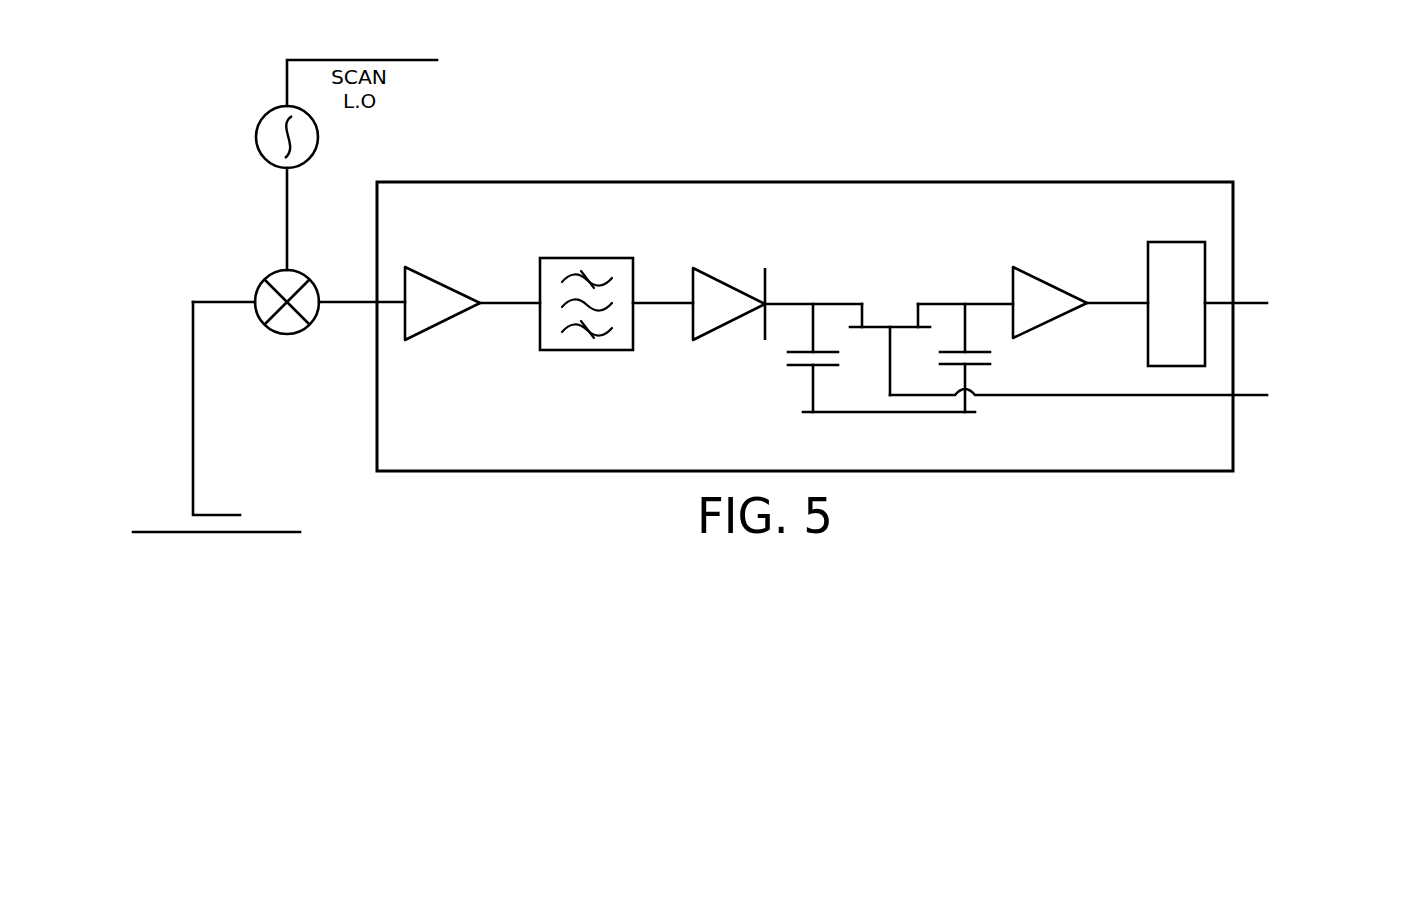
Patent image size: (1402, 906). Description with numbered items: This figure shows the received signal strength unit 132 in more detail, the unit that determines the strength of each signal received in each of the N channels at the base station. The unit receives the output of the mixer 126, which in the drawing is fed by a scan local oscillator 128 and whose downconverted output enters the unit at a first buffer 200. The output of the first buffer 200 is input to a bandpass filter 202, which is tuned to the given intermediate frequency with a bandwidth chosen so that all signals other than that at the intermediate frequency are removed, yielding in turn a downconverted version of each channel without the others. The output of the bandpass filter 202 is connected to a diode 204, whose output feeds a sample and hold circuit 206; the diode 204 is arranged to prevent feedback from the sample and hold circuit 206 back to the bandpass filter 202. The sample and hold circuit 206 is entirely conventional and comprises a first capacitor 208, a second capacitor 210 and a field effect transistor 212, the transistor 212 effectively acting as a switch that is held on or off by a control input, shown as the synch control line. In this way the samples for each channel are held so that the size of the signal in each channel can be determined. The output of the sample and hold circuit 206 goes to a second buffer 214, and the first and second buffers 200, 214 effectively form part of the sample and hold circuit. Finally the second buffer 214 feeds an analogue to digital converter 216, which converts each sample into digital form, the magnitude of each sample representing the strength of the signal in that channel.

The mixer 126 is at (259, 320).
The scan local oscillator 128 is at (263, 118).
The received signal strength unit 132 is at (976, 182).
The first buffer 200 is at (455, 321).
The bandpass filter 202 is at (569, 351).
The diode 204 is at (727, 283).
The sample and hold circuit 206 is at (941, 290).
The first capacitor 208 is at (797, 367).
The second capacitor 210 is at (985, 368).
The field effect transistor 212 is at (874, 333).
The second buffer 214 is at (1063, 323).
The analogue to digital converter 216 is at (1207, 270).